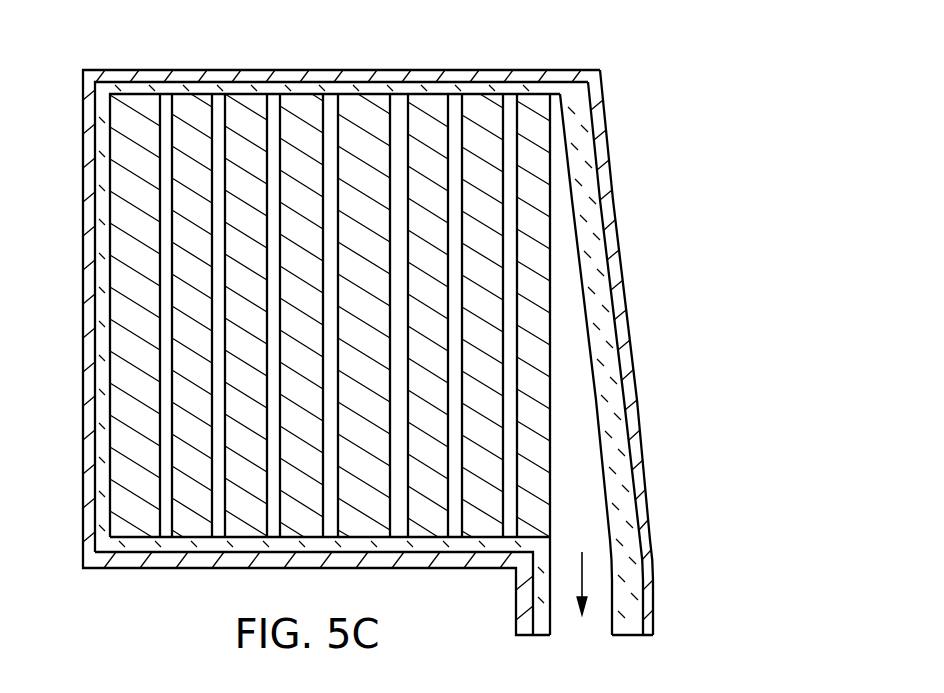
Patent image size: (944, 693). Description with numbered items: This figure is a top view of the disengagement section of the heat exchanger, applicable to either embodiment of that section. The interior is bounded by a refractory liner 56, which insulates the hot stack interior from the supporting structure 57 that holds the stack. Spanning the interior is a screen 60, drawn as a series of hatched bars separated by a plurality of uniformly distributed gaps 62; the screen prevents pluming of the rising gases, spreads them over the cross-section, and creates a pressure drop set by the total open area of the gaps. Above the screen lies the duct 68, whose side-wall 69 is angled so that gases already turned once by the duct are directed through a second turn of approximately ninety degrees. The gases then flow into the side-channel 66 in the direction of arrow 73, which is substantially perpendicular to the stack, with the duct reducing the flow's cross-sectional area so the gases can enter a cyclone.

The refractory liner 56 is at (593, 249).
The supporting structure 57 is at (608, 163).
The screen 60 is at (370, 108).
The gaps 62 is at (167, 100).
The side-channel 66 is at (598, 617).
The duct 68 is at (588, 453).
The side-wall of duct 69 is at (590, 342).
The arrow 73 is at (585, 567).